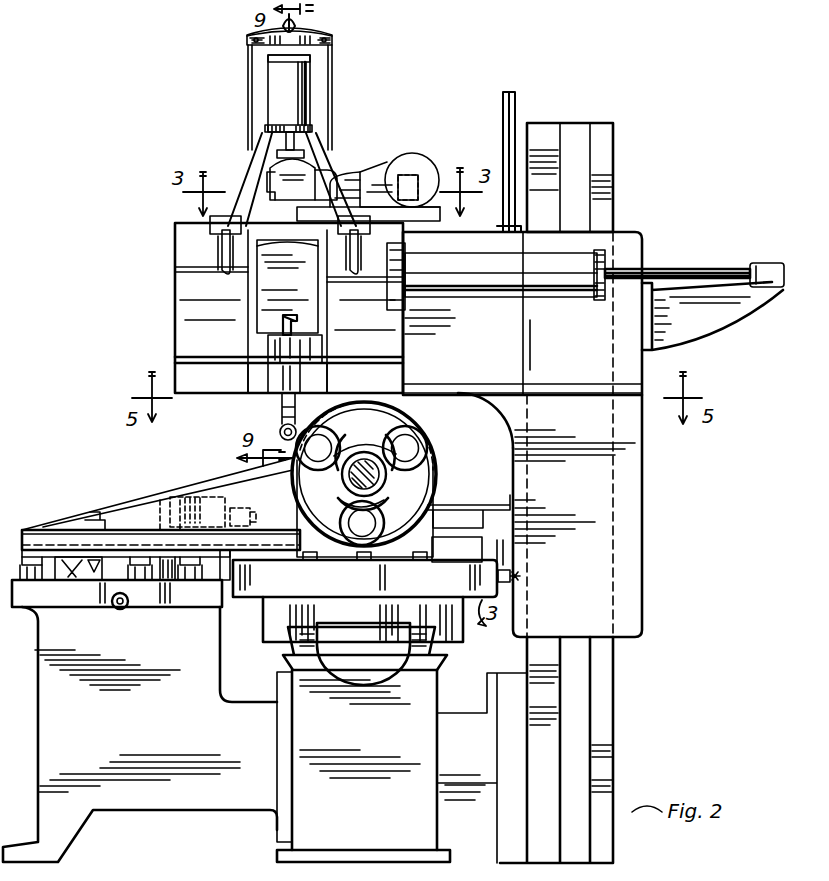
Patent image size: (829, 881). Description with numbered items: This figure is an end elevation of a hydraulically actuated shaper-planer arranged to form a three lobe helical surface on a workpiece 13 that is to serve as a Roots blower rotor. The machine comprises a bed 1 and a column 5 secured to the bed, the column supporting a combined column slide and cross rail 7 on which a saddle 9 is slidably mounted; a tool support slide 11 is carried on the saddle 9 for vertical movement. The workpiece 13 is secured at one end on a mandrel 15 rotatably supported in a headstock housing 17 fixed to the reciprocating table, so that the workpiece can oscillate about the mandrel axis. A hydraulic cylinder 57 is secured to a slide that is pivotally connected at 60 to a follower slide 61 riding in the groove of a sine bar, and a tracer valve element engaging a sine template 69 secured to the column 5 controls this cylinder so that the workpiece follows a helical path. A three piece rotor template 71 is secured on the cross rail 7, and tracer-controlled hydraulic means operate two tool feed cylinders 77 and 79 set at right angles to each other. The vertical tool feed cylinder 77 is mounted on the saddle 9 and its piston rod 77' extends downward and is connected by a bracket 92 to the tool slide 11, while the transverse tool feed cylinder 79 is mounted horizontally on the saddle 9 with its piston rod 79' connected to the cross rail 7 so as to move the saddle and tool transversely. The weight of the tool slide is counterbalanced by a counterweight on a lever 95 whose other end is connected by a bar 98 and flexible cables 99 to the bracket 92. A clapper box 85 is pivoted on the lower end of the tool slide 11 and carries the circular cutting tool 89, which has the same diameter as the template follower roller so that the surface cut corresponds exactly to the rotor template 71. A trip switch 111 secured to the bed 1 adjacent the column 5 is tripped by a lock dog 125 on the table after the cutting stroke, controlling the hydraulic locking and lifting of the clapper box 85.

The bed 1 is at (300, 718).
The column 5 is at (598, 726).
The combined column slide and cross rail 7 is at (440, 384).
The saddle 9 is at (405, 345).
The tool support slide 11 is at (266, 294).
The workpiece 13 is at (371, 479).
The mandrel 15 is at (345, 492).
The headstock housing 17 is at (312, 528).
The hydraulic cylinder 57 is at (216, 496).
The pivotal connection 60 is at (102, 520).
The follower slide 61 is at (90, 560).
The sine template 69 is at (474, 504).
The rotor template 71 is at (406, 162).
The vertical tool feed cylinder 77 is at (320, 93).
The piston rod 77' is at (258, 138).
The transverse tool feed cylinder 79 is at (515, 255).
The piston rod 79' is at (694, 250).
The clapper box 85 is at (276, 342).
The circular cutting tool 89 is at (283, 430).
The bracket 92 is at (315, 182).
The lever 95 is at (300, 22).
The bar 98 is at (322, 37).
The flexible cables 99 is at (250, 90).
The trip switch 111 is at (520, 574).
The lock dog 125 is at (499, 564).